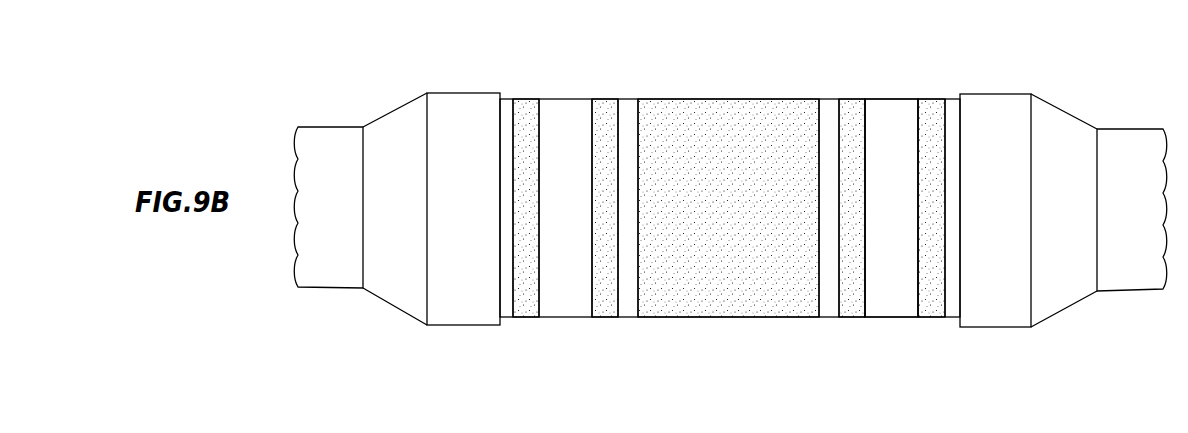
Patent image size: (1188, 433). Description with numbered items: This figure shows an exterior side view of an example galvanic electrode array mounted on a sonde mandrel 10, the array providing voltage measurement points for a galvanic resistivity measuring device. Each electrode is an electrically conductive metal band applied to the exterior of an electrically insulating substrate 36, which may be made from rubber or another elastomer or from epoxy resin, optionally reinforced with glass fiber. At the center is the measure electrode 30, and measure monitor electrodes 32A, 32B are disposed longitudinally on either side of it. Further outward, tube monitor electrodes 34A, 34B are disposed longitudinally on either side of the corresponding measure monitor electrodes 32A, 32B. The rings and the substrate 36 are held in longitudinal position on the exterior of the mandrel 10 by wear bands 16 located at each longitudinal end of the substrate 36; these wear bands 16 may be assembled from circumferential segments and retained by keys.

The mandrel 10 is at (307, 297).
The wear bands 16 is at (393, 308).
The measure electrode 30 is at (683, 99).
The measure monitor electrode 32A is at (845, 99).
The measure monitor electrode 32B is at (600, 99).
The tube monitor electrode 34A is at (937, 318).
The tube monitor electrode 34B is at (527, 318).
The electrically insulating substrate 36 is at (887, 318).